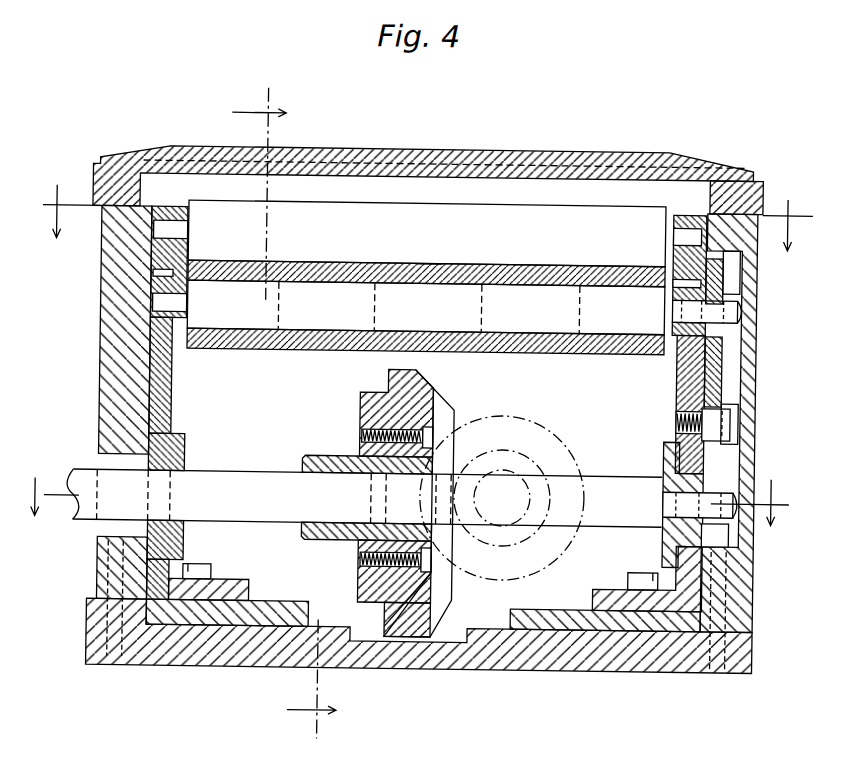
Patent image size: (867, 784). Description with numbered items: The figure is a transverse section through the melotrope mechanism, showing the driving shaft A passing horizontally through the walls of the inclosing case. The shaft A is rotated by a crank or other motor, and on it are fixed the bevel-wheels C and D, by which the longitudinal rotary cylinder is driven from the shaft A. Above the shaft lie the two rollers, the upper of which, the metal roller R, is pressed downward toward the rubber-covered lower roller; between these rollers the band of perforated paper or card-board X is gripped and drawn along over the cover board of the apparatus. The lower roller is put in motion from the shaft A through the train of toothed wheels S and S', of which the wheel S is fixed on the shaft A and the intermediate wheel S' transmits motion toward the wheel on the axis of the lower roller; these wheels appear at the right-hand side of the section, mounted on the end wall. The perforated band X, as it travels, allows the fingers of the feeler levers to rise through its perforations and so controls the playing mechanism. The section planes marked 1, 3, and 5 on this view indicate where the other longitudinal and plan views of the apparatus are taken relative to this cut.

The roller R is at (426, 277).
The band of perforated paper or card-board X is at (429, 255).
The bevel-wheel C is at (366, 485).
The bevel-wheel D is at (485, 504).
The driving shaft A is at (107, 499).
The toothed wheel S is at (715, 509).
The toothed wheel S' is at (706, 344).
The line 1 1 is at (284, 413).
The section line 3- 3 is at (425, 217).
The section line 5- 5 is at (407, 497).